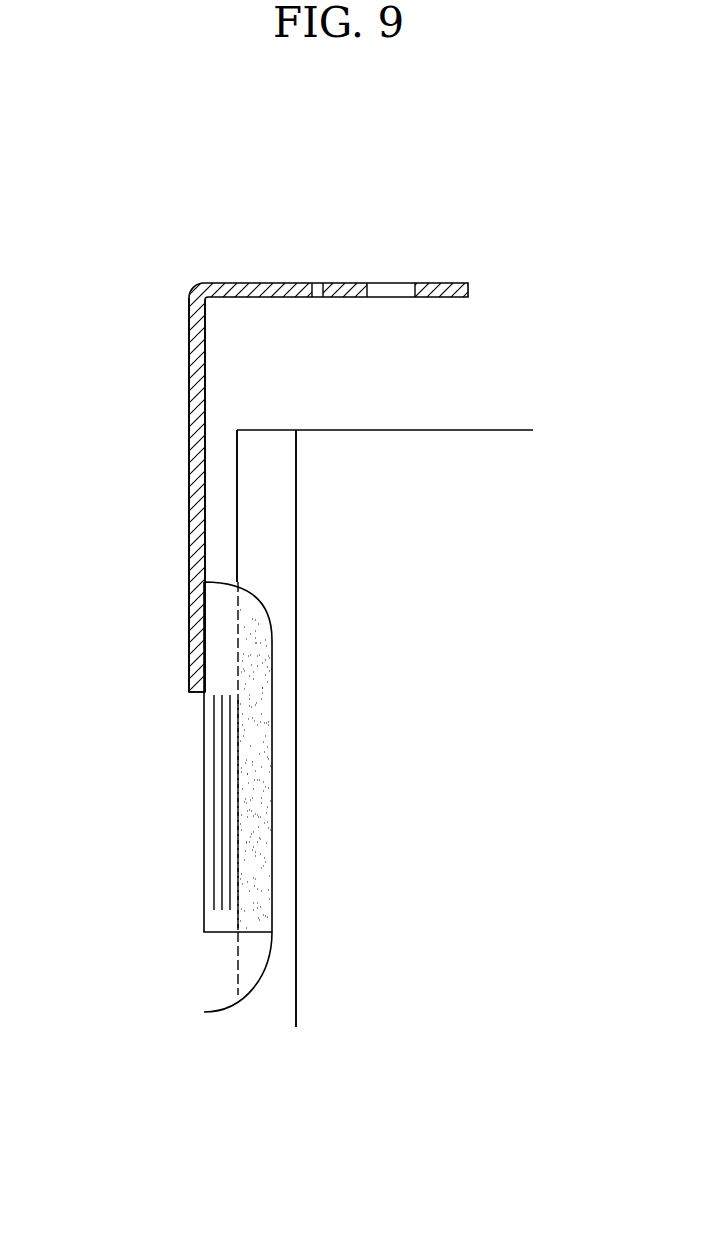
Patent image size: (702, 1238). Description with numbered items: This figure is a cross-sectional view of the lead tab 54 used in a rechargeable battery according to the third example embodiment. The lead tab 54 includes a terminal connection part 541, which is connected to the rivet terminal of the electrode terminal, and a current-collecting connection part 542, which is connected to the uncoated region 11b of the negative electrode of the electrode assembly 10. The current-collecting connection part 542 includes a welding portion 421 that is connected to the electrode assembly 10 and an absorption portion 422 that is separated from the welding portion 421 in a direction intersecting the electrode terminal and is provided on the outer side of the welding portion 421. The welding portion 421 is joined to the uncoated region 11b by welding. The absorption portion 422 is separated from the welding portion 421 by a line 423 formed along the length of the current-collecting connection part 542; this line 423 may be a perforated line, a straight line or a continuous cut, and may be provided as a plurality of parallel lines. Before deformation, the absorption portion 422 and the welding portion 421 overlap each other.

The lead tab 54 is at (332, 155).
The terminal connection part 541 is at (265, 283).
The current-collecting connection part 542 is at (186, 772).
The electrode assembly 10 is at (477, 455).
The uncoated region 11b is at (272, 512).
The welding portion 421 is at (260, 681).
The absorption portion 422 is at (214, 772).
The line 423 is at (220, 816).